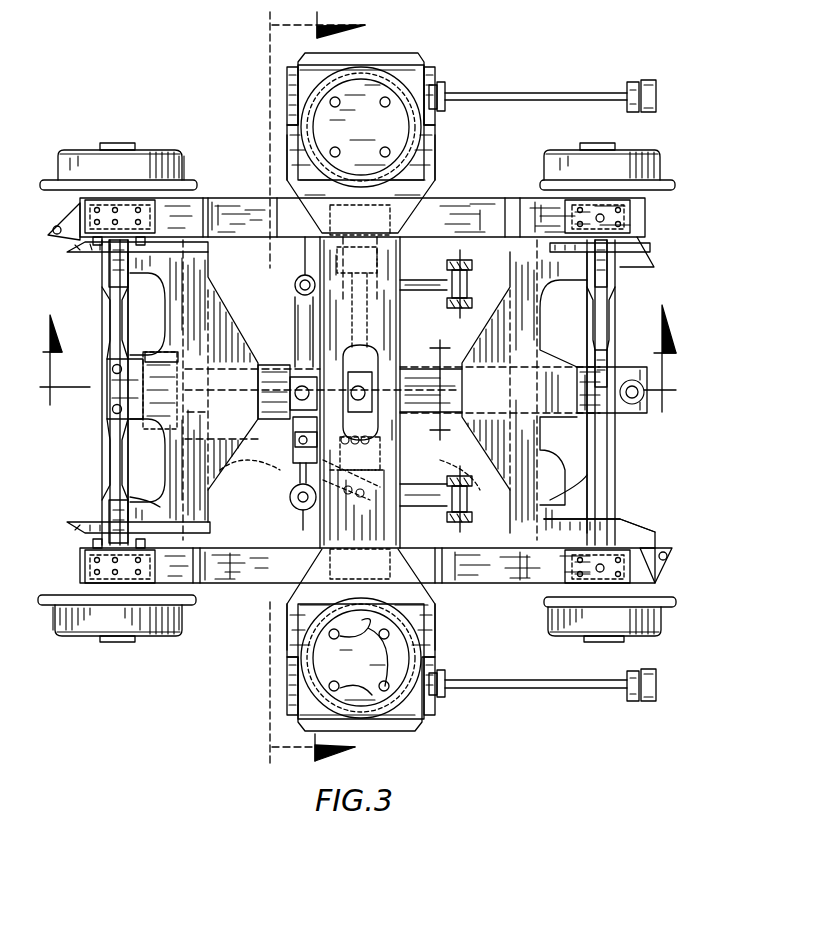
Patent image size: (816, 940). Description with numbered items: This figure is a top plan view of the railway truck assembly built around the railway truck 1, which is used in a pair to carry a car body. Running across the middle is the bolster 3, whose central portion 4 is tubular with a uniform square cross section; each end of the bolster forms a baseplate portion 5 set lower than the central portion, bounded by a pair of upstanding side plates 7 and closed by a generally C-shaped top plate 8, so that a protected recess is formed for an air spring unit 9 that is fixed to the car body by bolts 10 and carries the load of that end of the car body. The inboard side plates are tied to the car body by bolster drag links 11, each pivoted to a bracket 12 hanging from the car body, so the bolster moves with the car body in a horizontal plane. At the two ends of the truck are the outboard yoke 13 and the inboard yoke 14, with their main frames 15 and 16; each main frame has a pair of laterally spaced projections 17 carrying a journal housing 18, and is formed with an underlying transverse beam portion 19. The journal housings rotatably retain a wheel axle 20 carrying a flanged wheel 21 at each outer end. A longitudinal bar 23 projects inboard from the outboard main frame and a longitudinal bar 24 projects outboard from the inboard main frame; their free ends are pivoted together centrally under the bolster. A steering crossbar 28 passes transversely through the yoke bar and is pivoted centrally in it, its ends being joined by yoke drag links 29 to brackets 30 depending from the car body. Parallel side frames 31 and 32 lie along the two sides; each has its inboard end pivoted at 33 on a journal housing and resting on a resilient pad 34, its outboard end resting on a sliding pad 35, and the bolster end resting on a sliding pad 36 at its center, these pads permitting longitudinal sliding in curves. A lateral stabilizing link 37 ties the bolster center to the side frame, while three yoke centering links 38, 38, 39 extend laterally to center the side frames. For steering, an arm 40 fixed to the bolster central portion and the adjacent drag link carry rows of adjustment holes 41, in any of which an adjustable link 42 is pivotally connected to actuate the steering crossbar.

The railway truck 1 is at (200, 100).
The bolster 3 is at (402, 53).
The central portion 4 is at (395, 330).
The baseplate portion 5 is at (270, 23).
The side plates 7 is at (298, 110).
The top plate 8 is at (420, 170).
The air spring unit 9 is at (272, 140).
The bolts 10 is at (362, 650).
The bolster drag link 11 is at (512, 93).
The bracket 12 is at (655, 80).
The outboard yoke 13 is at (155, 297).
The inboard yoke 14 is at (580, 320).
The main frame 15 is at (165, 310).
The main frame 16 is at (590, 482).
The projections 17 is at (95, 262).
The journal housing 18 is at (65, 218).
The transverse beam portion 19 is at (285, 455).
The wheel axle 20 is at (108, 470).
The flanged wheel 21 is at (90, 160).
The longitudinal bar 23 is at (270, 358).
The longitudinal bar 24 is at (418, 385).
The steering crossbar 28 is at (296, 290).
The yoke drag link 29 is at (440, 270).
The bracket 30 is at (472, 275).
The side frame 31 is at (236, 204).
The side frame 32 is at (250, 584).
The pivot 33 is at (555, 215).
The resilient pad 34 is at (635, 216).
The sliding pad 35 is at (185, 165).
The sliding pad 36 is at (430, 202).
The lateral stabilizing link 37 is at (385, 300).
The yoke centering link 38 is at (110, 350).
The yoke centering link 39 is at (605, 335).
The arm 40 is at (290, 480).
The adjustment holes 41 is at (395, 462).
The adjustable link 42 is at (275, 497).